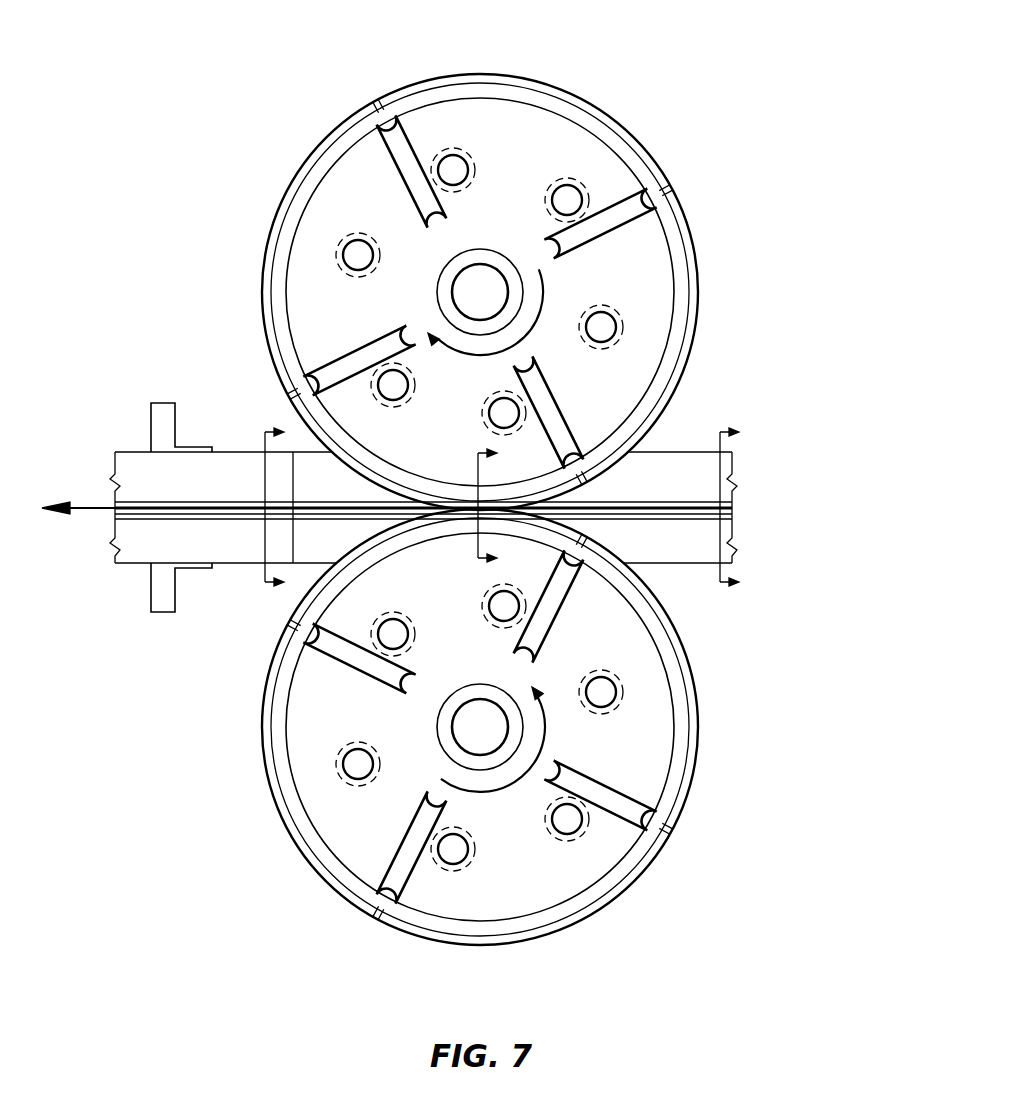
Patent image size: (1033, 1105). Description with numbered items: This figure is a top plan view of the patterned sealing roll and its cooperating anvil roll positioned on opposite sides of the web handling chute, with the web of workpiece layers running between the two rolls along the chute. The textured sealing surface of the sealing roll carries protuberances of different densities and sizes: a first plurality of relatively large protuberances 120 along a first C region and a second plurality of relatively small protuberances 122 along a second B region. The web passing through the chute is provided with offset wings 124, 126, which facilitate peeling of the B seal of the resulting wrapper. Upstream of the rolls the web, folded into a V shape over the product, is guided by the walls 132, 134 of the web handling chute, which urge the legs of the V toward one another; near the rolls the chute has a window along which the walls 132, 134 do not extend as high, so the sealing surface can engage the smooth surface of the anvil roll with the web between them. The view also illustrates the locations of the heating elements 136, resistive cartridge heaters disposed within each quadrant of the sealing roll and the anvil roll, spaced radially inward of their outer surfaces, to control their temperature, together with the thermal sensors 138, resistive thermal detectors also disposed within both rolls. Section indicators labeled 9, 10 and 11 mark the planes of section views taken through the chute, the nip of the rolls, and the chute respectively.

The relatively large protuberances 120 is at (293, 618).
The relatively small protuberances 122 is at (275, 795).
The offset wing 124 is at (250, 515).
The offset wing 126 is at (240, 500).
The wall of web handling chute 132 is at (642, 522).
The wall of web handling chute 134 is at (642, 497).
The heating elements 136 is at (471, 158).
The thermal sensors 138 is at (618, 311).
The section line 9 is at (736, 508).
The section line 10 is at (501, 506).
The section line 11 is at (288, 507).